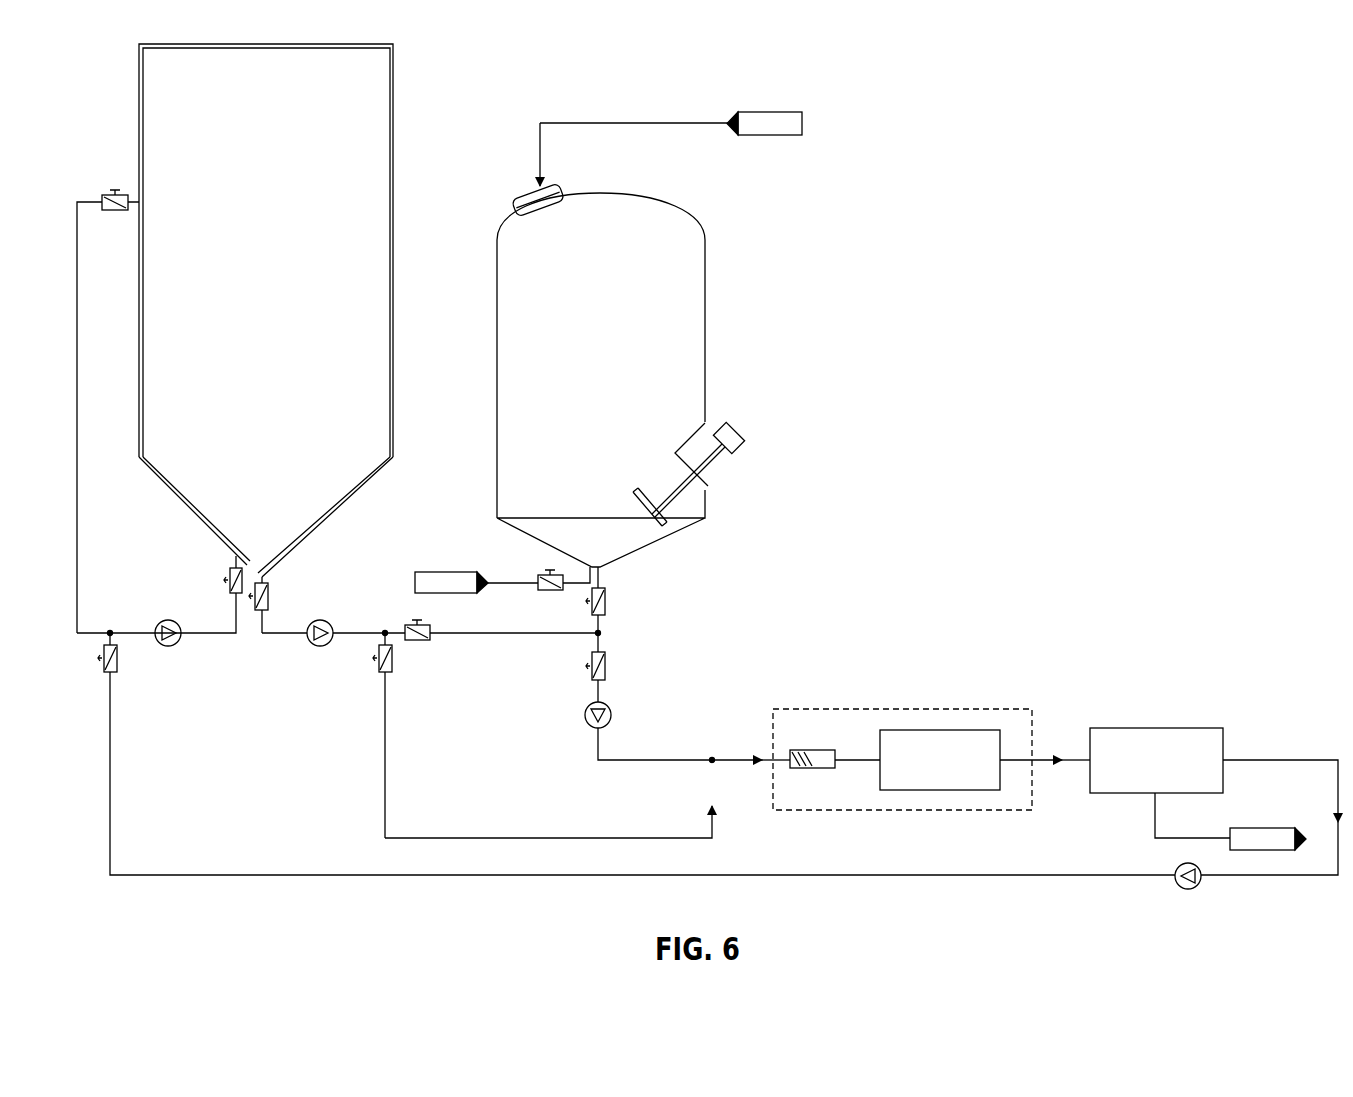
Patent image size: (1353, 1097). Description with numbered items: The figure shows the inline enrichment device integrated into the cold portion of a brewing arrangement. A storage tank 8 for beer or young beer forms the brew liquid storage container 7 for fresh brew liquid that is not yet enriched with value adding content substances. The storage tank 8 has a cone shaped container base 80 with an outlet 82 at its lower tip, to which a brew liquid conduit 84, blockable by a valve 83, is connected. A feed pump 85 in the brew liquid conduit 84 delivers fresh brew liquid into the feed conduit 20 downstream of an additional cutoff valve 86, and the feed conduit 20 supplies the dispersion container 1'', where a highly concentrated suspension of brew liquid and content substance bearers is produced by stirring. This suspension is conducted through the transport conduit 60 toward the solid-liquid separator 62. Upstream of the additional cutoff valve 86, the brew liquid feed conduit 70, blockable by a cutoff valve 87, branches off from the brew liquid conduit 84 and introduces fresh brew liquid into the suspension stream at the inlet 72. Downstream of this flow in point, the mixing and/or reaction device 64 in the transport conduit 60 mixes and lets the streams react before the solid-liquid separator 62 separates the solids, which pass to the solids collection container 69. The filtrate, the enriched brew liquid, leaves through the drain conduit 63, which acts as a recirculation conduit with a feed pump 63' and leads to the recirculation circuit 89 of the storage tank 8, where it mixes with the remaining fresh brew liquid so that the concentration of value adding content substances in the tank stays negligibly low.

The dispersion container 1'' is at (655, 339).
The brew liquid storage container 7 is at (283, 338).
The storage tank 8 is at (313, 310).
The feed conduit 20 is at (502, 636).
The transport conduit 60 is at (668, 758).
The solid-liquid separator 62 is at (1162, 725).
The drain conduit 63 is at (1269, 773).
The feed pump 63' is at (1142, 864).
The mixing and/or reaction device 64 is at (909, 707).
The solids collection container 69 is at (1259, 826).
The brew liquid feed conduit 70 is at (525, 836).
The inlet 72 is at (712, 758).
The cone shaped container base 80 is at (327, 515).
The outlet 82 is at (264, 576).
The valve 83 is at (270, 604).
The brew liquid conduit 84 is at (272, 634).
The feed pump 85 is at (322, 647).
The additional cutoff valve 86 is at (420, 645).
The cutoff valve 87 is at (392, 668).
The recirculation circuit 89 is at (80, 645).